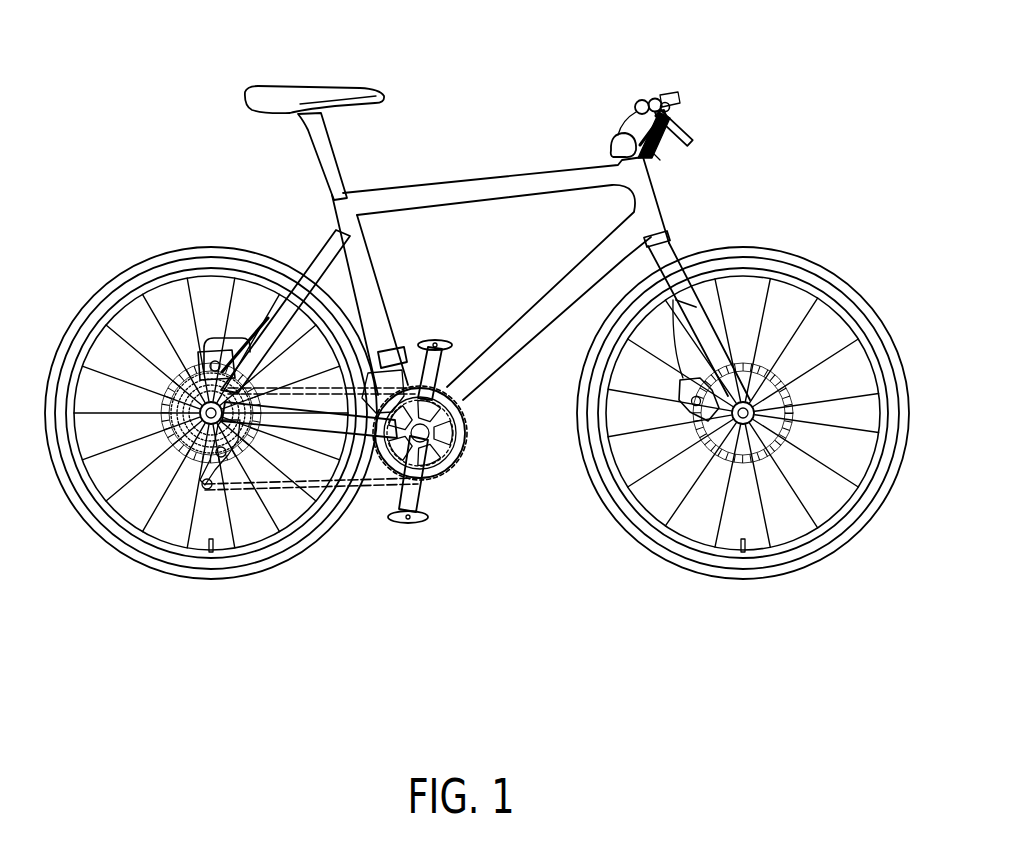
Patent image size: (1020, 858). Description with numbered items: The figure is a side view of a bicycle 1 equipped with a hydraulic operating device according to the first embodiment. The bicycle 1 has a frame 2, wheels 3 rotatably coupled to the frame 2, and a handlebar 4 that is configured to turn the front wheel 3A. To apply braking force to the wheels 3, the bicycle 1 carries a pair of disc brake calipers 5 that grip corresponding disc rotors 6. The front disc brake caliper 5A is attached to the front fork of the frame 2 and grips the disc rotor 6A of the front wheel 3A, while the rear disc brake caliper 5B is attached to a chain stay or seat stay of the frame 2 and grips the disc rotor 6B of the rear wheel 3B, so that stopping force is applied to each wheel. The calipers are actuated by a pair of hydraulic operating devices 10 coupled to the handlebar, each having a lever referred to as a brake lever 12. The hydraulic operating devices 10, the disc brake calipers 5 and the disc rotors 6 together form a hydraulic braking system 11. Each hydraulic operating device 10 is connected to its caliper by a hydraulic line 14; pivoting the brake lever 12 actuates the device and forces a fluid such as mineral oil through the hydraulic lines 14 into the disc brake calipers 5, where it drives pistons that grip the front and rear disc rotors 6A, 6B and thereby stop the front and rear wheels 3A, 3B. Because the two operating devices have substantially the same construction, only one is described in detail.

The bicycle 1 is at (505, 57).
The frame 2 is at (578, 265).
The wheels 3 is at (405, 686).
The front wheel 3A is at (637, 542).
The rear wheel 3B is at (300, 547).
The handlebar 4 is at (650, 95).
The disc brake calipers 5 is at (397, 272).
The front disc brake caliper 5A is at (680, 392).
The rear disc brake caliper 5B is at (260, 337).
The disc rotors 6 is at (393, 590).
The front disc rotor 6A is at (623, 467).
The rear disc rotor 6B is at (323, 473).
The hydraulic operating device 10 is at (706, 111).
The hydraulic braking system 11 is at (816, 100).
The brake lever 12 is at (692, 136).
The hydraulic lines 14 is at (652, 155).